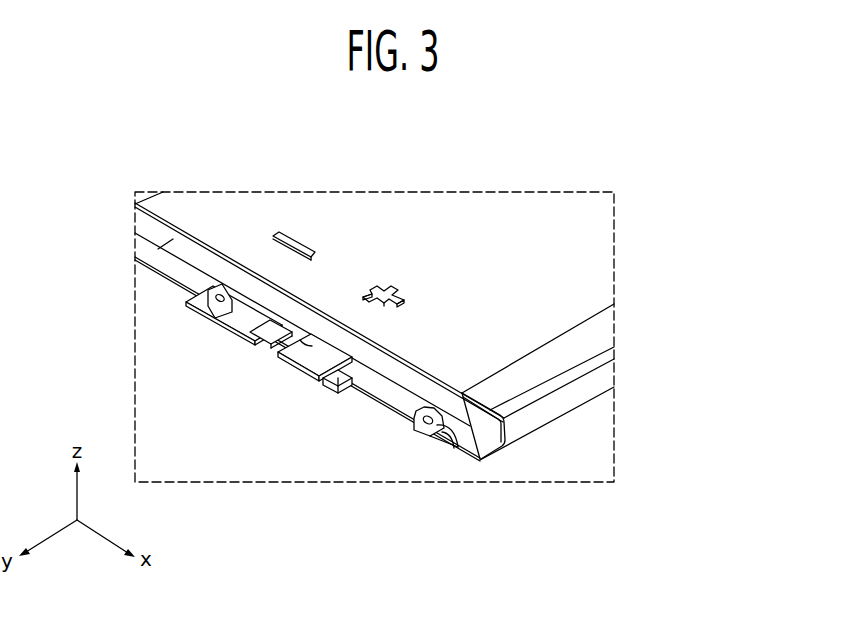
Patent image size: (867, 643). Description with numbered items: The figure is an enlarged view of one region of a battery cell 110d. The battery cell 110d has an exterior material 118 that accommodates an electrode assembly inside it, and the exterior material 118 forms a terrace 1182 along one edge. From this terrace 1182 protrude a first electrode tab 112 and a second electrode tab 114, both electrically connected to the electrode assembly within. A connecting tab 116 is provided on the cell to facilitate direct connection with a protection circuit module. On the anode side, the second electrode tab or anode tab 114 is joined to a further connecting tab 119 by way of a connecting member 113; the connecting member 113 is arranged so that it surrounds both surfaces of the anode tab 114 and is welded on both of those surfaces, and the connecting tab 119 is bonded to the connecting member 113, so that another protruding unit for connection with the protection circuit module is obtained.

The battery cell 110d is at (590, 248).
The exterior material 118 is at (546, 320).
The terrace 1182 is at (467, 427).
The connecting tab 116 is at (192, 301).
The first electrode tab 112 is at (199, 316).
The second electrode tab 114 is at (295, 363).
The connecting member 113 is at (323, 384).
The connecting tab 119 is at (430, 444).